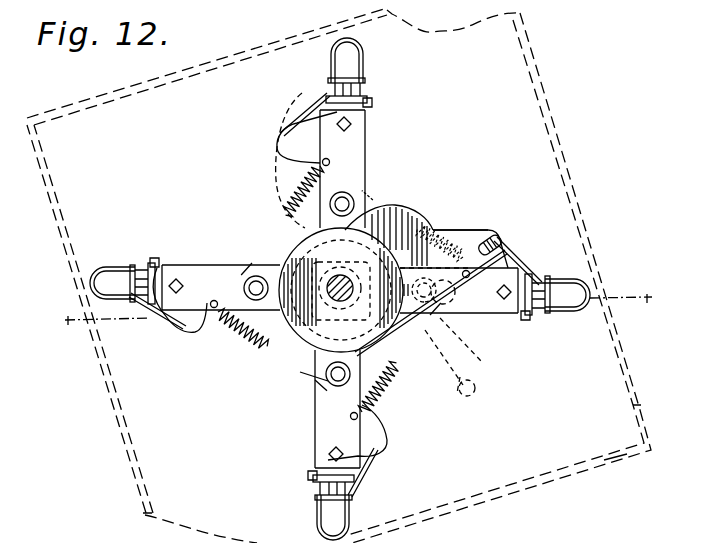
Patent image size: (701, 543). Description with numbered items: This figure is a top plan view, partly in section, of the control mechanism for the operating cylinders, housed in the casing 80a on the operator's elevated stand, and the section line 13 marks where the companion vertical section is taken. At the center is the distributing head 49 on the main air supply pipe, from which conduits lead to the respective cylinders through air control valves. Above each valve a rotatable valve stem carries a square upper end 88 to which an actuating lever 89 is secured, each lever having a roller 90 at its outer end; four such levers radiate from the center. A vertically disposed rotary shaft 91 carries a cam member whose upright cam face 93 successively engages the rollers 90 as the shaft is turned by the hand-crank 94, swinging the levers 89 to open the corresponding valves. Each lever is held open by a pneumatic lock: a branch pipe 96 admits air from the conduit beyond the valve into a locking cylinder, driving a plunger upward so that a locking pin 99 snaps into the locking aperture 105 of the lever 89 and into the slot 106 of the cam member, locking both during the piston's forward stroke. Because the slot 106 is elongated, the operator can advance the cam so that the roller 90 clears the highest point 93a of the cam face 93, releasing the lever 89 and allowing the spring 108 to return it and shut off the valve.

The section line 13— 13 is at (359, 311).
The distributing head 49 is at (300, 358).
The casing 80a is at (567, 165).
The square upper end 88 is at (163, 298).
The actuating lever 89 is at (213, 273).
The roller 90 is at (330, 377).
The rotary shaft 91 is at (352, 280).
The cam face 93 is at (417, 210).
The highest point of the cam face 93a is at (430, 230).
The hand-crank 94 is at (467, 367).
The branch pipe 96 is at (541, 280).
The locking pin 99 is at (502, 250).
The locking aperture 105 is at (213, 315).
The slot 106 is at (500, 244).
The spring 108 is at (268, 214).